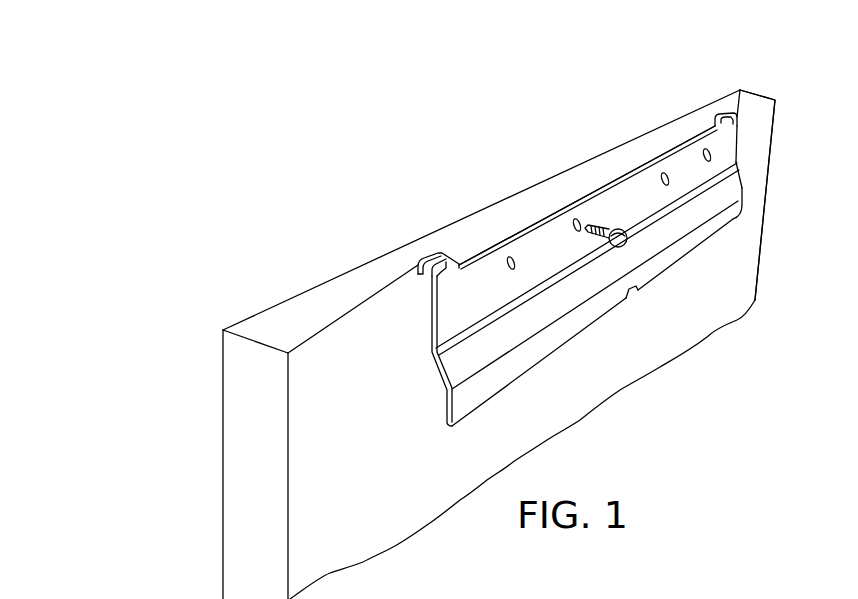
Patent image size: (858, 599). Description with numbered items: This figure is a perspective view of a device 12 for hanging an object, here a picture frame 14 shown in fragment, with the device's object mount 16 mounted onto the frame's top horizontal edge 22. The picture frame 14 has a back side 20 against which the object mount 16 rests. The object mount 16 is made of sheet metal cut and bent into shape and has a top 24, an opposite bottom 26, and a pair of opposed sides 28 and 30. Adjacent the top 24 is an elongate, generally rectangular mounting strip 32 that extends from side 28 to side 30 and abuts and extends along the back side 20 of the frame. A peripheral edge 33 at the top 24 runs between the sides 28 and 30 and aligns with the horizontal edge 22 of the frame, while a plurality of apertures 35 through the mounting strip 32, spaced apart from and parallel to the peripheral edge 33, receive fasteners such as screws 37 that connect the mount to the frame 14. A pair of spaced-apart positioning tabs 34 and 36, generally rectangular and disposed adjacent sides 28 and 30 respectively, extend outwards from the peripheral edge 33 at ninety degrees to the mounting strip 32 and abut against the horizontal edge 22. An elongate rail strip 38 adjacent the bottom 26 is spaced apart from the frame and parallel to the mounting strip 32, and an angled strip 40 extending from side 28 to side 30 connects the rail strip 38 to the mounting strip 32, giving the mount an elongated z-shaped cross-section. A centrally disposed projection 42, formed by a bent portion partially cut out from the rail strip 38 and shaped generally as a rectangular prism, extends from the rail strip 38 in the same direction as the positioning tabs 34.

The device 12 is at (762, 83).
The picture frame 14 is at (222, 437).
The object mount 16 is at (752, 150).
The back side 20 is at (346, 391).
The top horizontal edge 22 is at (331, 317).
The top 24 is at (596, 189).
The bottom 26 is at (520, 386).
The side 28 is at (430, 330).
The side 30 is at (740, 168).
The elongate mounting strip 32 is at (481, 303).
The peripheral edge 33 is at (522, 232).
The positioning tab 34 is at (430, 256).
The apertures 35 is at (580, 202).
The positioning tab 36 is at (716, 117).
The screws 37 is at (620, 228).
The elongate rail strip 38 is at (712, 228).
The angled strip 40 is at (708, 195).
The projection 42 is at (636, 302).